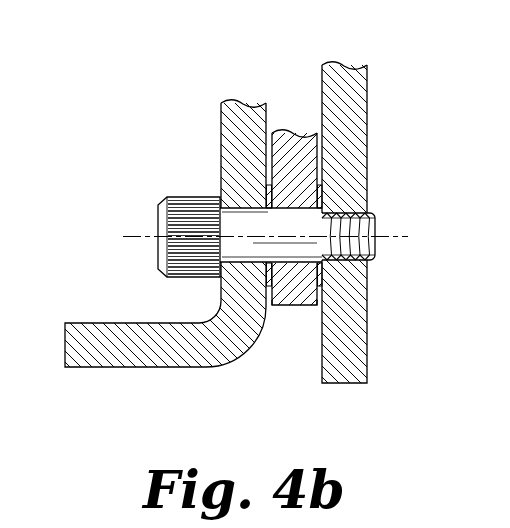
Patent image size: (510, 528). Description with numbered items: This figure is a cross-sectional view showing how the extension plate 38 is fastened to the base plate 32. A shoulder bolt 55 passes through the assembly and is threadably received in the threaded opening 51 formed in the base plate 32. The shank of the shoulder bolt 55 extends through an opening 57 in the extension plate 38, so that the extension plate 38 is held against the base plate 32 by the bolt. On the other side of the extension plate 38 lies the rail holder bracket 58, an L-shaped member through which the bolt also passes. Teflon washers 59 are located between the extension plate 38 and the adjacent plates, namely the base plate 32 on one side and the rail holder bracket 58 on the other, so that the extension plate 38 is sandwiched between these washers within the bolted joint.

The base plate 32 is at (350, 99).
The extension plate 38 is at (293, 137).
The threaded opening 51 is at (357, 236).
The shoulder bolt 55 is at (182, 205).
The opening 57 is at (268, 285).
The rail holder bracket 58 is at (156, 332).
The Teflon washers 59 is at (317, 305).